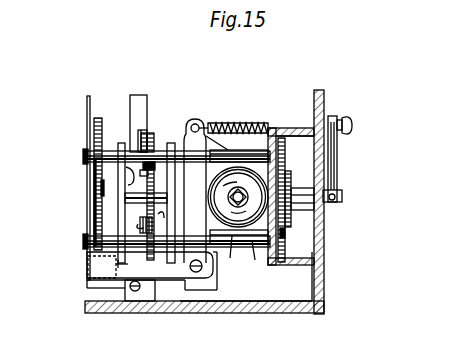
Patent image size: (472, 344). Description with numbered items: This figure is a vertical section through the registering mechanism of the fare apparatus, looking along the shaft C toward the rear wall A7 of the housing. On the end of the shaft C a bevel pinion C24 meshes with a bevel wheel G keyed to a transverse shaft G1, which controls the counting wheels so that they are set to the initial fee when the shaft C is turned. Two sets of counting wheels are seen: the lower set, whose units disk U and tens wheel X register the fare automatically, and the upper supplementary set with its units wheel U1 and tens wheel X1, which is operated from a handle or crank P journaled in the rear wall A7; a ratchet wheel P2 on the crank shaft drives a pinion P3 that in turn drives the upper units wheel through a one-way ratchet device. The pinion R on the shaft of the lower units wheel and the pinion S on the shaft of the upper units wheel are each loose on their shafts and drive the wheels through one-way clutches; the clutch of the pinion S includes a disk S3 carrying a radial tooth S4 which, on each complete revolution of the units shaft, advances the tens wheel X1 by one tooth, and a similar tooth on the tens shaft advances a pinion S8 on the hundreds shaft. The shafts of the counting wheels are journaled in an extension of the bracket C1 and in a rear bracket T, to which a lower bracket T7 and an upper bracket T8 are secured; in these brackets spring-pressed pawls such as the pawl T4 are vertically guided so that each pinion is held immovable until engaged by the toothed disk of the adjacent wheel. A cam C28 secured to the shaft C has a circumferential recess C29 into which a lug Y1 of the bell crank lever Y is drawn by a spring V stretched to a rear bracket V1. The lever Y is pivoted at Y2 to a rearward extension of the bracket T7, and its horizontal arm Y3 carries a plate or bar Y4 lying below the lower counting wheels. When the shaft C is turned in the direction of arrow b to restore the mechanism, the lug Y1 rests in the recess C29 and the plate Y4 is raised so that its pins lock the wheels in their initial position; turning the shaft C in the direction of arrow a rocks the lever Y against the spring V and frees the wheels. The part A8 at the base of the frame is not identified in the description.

The rear wall of the housing A7 is at (322, 268).
The frame base A8 is at (218, 301).
The upper units wheel U1 is at (97, 130).
The units disk U is at (95, 201).
The upper tens counting wheel X1 is at (96, 178).
The tens counting wheel X is at (176, 232).
The bracket T is at (121, 146).
The bevel wheel G is at (165, 203).
The transverse shaft G1 is at (148, 211).
The upper bracket T8 is at (140, 104).
The lower bracket T7 is at (143, 134).
The clutch disk S3 is at (152, 135).
The pinion S is at (154, 140).
The radial tooth S4 is at (148, 174).
The pinion S8 is at (104, 190).
The bell crank lever Y is at (192, 218).
The projection or lug Y1 is at (208, 190).
The bracket C1 is at (190, 124).
The spring V is at (234, 123).
The rear bracket V1 is at (282, 128).
The bevel pinion C24 is at (232, 168).
The arrow a is at (238, 197).
The arrow b is at (245, 213).
The circumferential recess C29 is at (231, 251).
The cam C28 is at (257, 256).
The ratchet wheel P2 is at (296, 200).
The pinion P3 is at (286, 232).
The shaft C is at (291, 180).
The handle or crank P is at (352, 124).
The pinion R is at (152, 250).
The pivot Y2 is at (196, 272).
The horizontal arm Y3 is at (157, 282).
The pawl T4 is at (129, 287).
The plate or bar Y4 is at (90, 280).